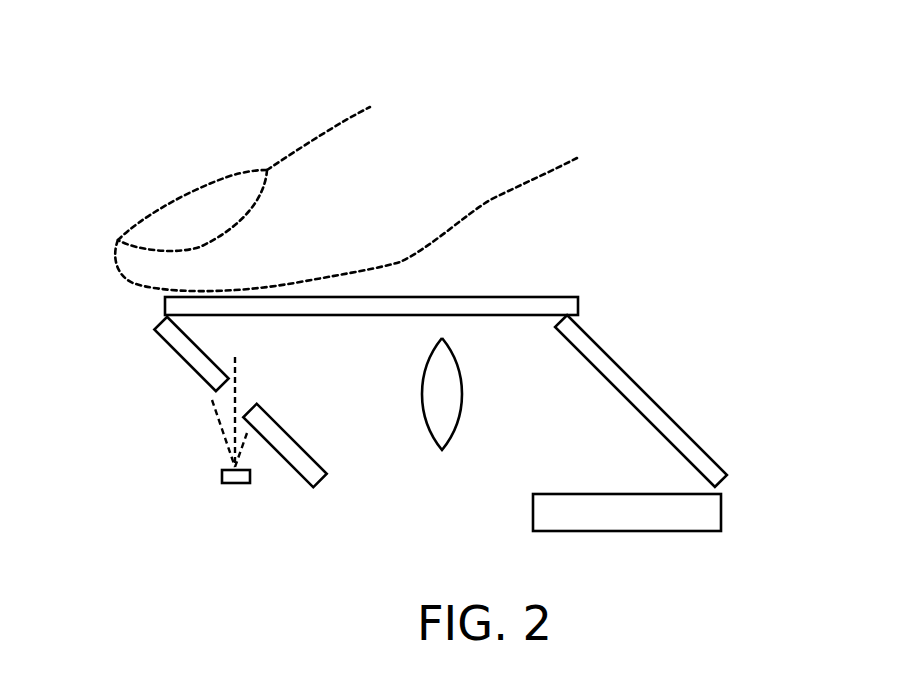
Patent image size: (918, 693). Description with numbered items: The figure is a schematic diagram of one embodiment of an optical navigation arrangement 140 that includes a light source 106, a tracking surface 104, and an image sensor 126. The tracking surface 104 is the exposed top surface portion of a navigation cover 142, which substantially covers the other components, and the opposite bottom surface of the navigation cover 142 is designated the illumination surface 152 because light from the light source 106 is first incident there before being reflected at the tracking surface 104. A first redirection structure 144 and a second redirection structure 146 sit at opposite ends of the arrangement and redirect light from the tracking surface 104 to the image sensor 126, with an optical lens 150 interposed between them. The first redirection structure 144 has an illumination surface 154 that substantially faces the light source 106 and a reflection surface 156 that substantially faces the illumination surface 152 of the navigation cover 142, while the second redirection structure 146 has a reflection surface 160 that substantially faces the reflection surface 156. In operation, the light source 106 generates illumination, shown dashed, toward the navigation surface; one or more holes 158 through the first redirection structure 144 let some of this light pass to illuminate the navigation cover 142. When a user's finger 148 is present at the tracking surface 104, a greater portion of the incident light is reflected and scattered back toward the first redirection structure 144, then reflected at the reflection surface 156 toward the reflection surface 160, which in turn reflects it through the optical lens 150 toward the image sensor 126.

The optical navigation arrangement 140 is at (195, 44).
The finger 148 is at (317, 135).
The tracking surface 104 is at (396, 290).
The navigation cover 142 is at (483, 307).
The illumination surface 152 is at (501, 324).
The reflection surface 160 is at (570, 357).
The second redirection structure 146 is at (665, 423).
The image sensor 126 is at (722, 513).
The optical lens 150 is at (458, 418).
The illumination surface 154 is at (174, 367).
The light source 106 is at (222, 472).
The first redirection structure 144 is at (310, 473).
The reflection surface 156 is at (320, 455).
The holes 158 is at (258, 387).